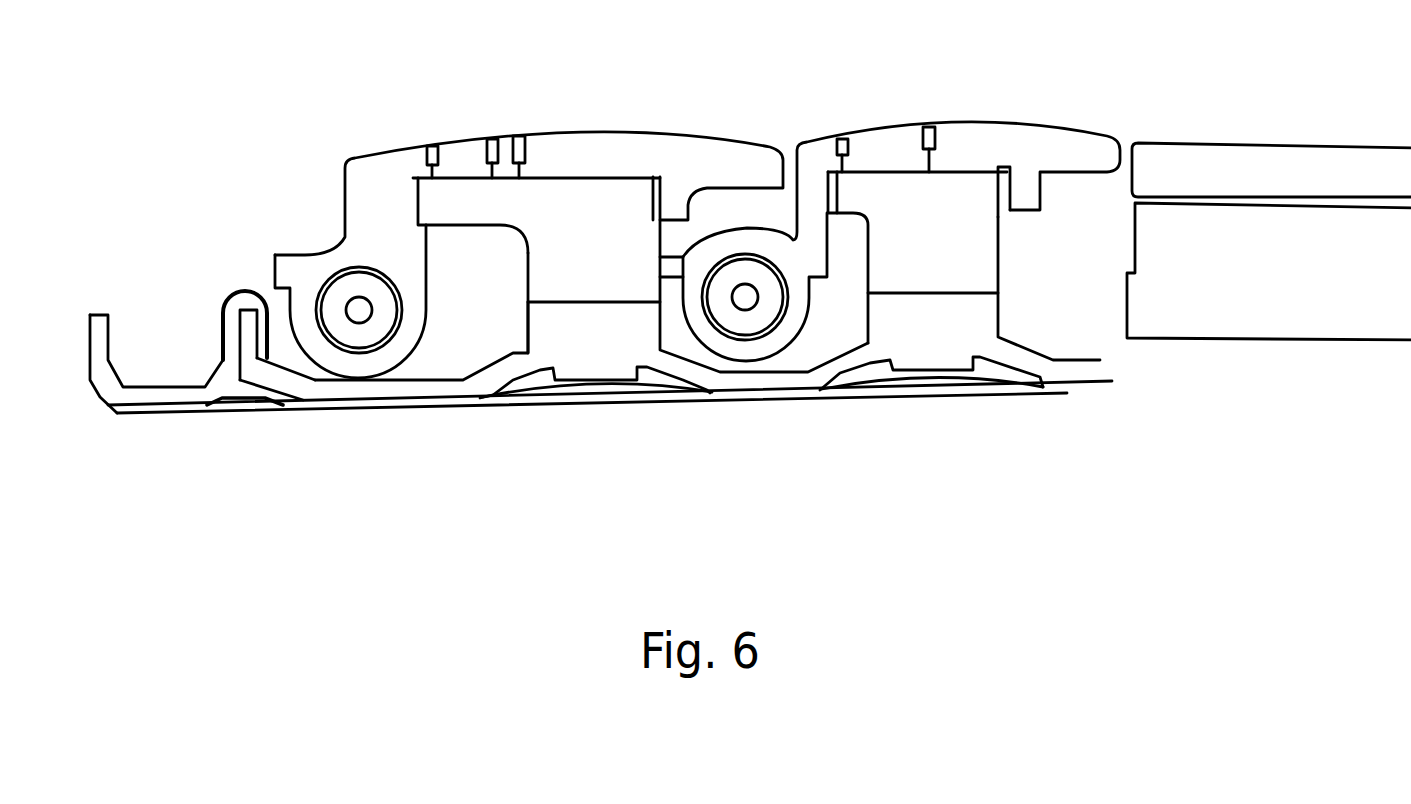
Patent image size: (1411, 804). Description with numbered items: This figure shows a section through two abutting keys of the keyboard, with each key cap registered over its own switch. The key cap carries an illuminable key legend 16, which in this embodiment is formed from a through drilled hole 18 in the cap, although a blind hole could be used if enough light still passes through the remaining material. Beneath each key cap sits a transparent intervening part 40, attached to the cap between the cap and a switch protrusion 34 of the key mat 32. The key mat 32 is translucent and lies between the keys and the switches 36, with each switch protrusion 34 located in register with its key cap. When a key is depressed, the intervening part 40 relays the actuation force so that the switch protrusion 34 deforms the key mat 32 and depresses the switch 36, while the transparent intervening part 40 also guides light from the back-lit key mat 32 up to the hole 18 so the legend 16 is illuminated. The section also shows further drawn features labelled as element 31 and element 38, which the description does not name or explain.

The illuminable key legend 16 is at (837, 140).
The through drilled hole 18 is at (880, 146).
The guide cap 31 is at (235, 302).
The key mat 32 is at (315, 385).
The switch protrusion 34 is at (617, 330).
The switch 36 is at (578, 387).
The roller 38 is at (340, 328).
The transparent intervening part 40 is at (617, 242).